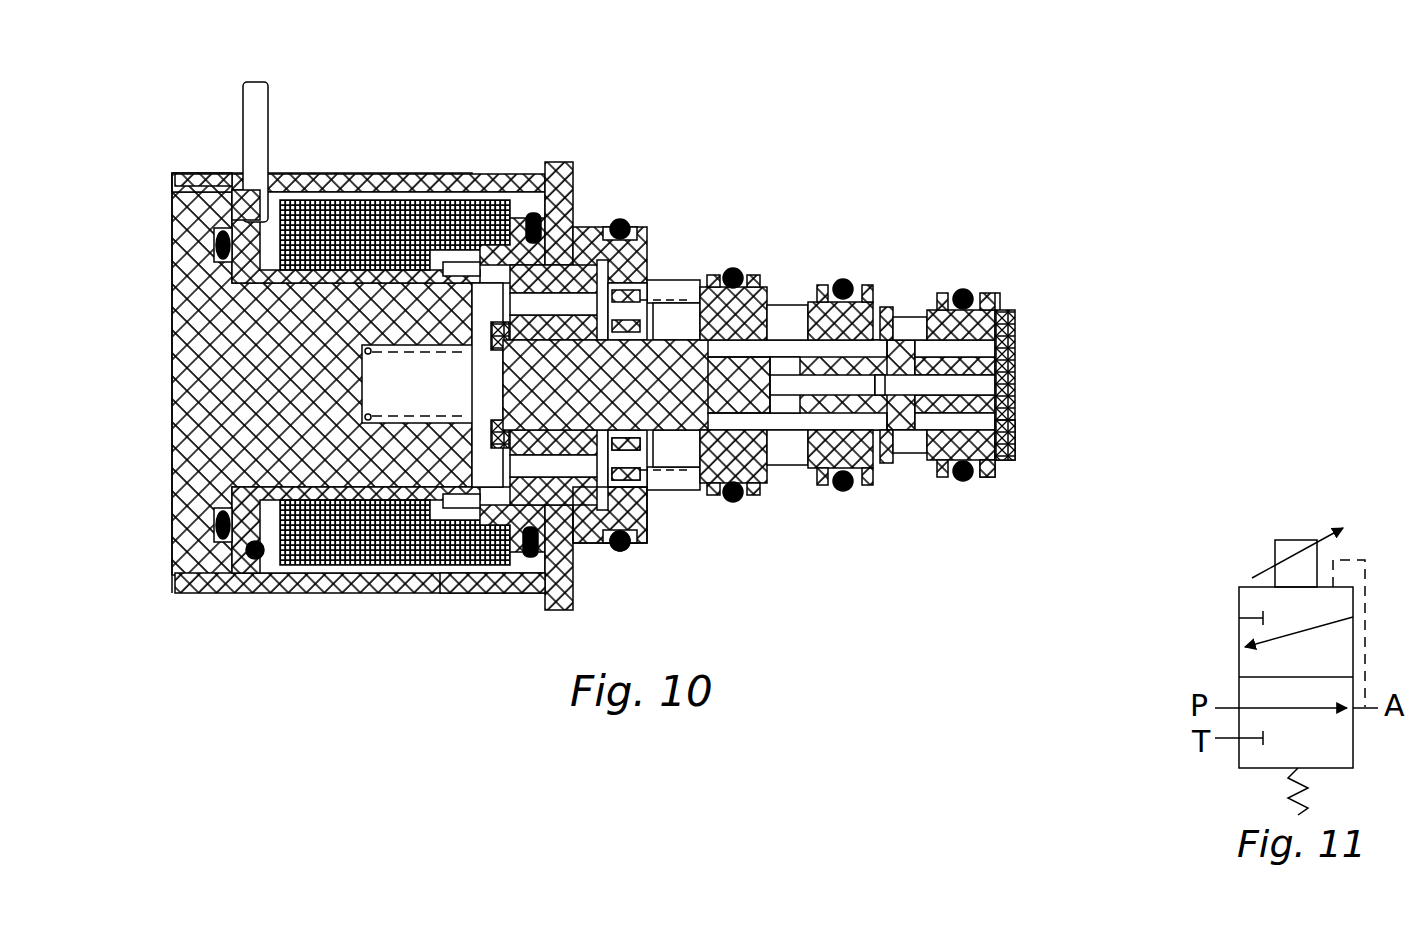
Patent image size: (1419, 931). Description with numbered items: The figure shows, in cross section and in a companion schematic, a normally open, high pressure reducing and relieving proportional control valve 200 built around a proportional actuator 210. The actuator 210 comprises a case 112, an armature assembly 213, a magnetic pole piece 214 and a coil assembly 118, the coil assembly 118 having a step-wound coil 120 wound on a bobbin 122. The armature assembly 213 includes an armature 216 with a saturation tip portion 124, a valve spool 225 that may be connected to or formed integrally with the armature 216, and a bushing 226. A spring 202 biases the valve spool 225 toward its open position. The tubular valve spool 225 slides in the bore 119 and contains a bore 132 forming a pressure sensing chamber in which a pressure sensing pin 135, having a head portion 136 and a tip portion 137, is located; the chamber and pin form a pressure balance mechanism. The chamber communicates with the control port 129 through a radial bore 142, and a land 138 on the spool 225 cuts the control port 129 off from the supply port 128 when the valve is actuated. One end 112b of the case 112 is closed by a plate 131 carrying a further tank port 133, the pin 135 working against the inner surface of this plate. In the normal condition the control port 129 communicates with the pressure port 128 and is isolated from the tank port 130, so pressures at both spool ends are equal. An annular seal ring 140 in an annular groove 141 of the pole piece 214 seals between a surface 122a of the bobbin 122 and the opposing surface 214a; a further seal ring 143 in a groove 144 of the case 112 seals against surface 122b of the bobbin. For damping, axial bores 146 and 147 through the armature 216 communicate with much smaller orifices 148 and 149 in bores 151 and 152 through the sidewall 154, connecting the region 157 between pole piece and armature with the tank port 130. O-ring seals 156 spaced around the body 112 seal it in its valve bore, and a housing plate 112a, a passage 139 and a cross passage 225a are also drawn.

In FIG. 10, the case 112 is at (445, 200).
In FIG. 10, the housing plate 112a is at (400, 593).
In FIG. 10, the end of the valve case 112b is at (997, 294).
In FIG. 10, the coil assembly 118 is at (378, 190).
In FIG. 10, the bore 119 is at (881, 335).
In FIG. 10, the step-wound coil 120 is at (350, 227).
In FIG. 10, the bobbin 122 is at (525, 570).
In FIG. 10, the surface of the bobbin 122a is at (236, 190).
In FIG. 10, the surface of the bobbin 122b is at (531, 556).
In FIG. 10, the saturation tip portion 124 is at (522, 162).
In FIG. 10, the supply port 128 is at (920, 460).
In FIG. 11, the supply port 128 is at (1238, 708).
In FIG. 10, the control port 129 is at (793, 305).
In FIG. 11, the control port 129 is at (1362, 714).
In FIG. 10, the tank port 130 is at (714, 290).
In FIG. 11, the tank port 130 is at (1238, 740).
In FIG. 10, the plate 131 is at (1017, 443).
In FIG. 10, the bore 132 is at (860, 443).
In FIG. 10, the further tank port 133 is at (1012, 422).
In FIG. 10, the pressure sensing pin 135 is at (905, 432).
In FIG. 10, the head portion 136 is at (940, 292).
In FIG. 10, the tip portion 137 is at (982, 388).
In FIG. 10, the land 138 is at (1003, 470).
In FIG. 10, the passage 139 is at (793, 367).
In FIG. 10, the annular seal ring 140 is at (217, 247).
In FIG. 10, the annular groove 141 is at (222, 265).
In FIG. 10, the radial bore 142 is at (845, 337).
In FIG. 10, the annular seal ring 143 is at (548, 600).
In FIG. 10, the annular groove 144 is at (470, 593).
In FIG. 10, the axial bore 146 is at (585, 268).
In FIG. 10, the axial bore 147 is at (617, 548).
In FIG. 10, the orifice 148 is at (650, 318).
In FIG. 10, the orifice 149 is at (637, 470).
In FIG. 10, the bore 151 is at (648, 292).
In FIG. 10, the bore 152 is at (640, 485).
In FIG. 10, the sidewall 154 is at (647, 537).
In FIG. 10, the seals 156 is at (628, 222).
In FIG. 10, the region 157 is at (512, 237).
In FIG. 10, the proportional control valve 200 is at (882, 153).
In FIG. 11, the proportional control valve 200 is at (1314, 671).
In FIG. 10, the spring 202 is at (417, 384).
In FIG. 10, the proportional actuator 210 is at (162, 258).
In FIG. 10, the armature assembly 213 is at (640, 262).
In FIG. 10, the magnetic pole piece 214 is at (172, 378).
In FIG. 10, the surface of the magnetic pole piece 214a is at (175, 196).
In FIG. 10, the armature 216 is at (510, 450).
In FIG. 10, the valve spool 225 is at (760, 405).
In FIG. 10, the cross passage 225a is at (790, 415).
In FIG. 10, the bushing 226 is at (1000, 364).